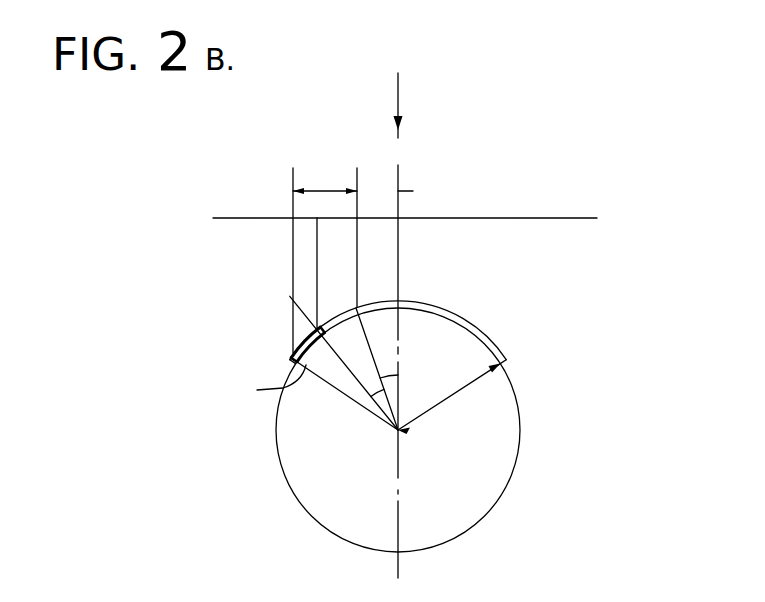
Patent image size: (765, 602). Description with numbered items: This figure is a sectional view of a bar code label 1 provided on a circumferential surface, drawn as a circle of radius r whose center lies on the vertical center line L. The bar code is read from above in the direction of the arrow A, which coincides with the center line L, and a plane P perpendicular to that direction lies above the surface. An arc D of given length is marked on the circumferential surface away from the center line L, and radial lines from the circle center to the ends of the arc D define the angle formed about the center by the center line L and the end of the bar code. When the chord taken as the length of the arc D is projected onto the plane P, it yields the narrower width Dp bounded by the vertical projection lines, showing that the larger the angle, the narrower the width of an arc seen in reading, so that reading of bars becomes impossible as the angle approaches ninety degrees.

The bar code label 1 is at (530, 333).
The arrow A is at (387, 325).
The plane P is at (523, 217).
The center line L is at (417, 189).
The radius r is at (449, 399).
The arc D is at (309, 341).
The projected width Dp is at (325, 190).